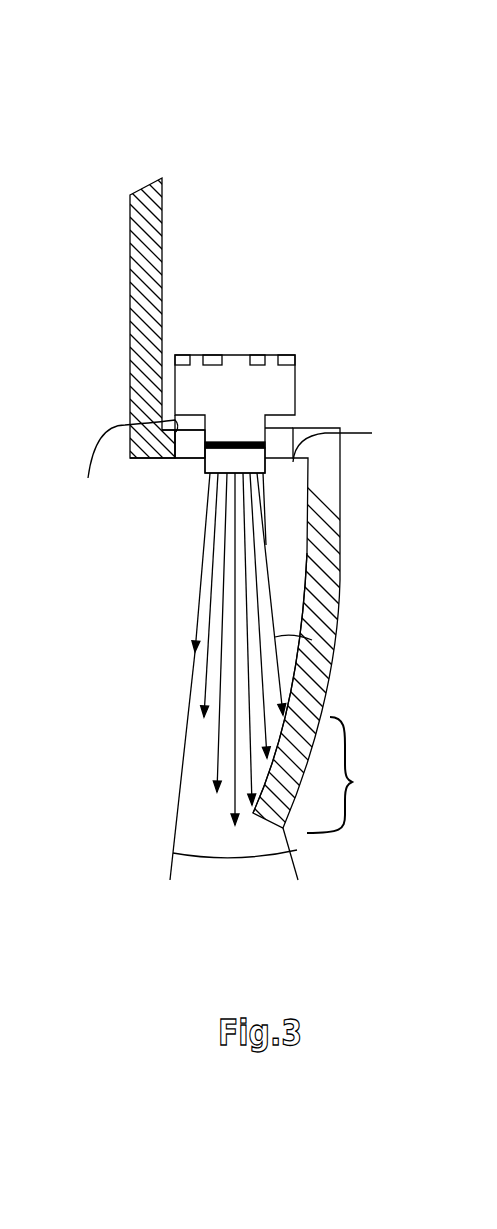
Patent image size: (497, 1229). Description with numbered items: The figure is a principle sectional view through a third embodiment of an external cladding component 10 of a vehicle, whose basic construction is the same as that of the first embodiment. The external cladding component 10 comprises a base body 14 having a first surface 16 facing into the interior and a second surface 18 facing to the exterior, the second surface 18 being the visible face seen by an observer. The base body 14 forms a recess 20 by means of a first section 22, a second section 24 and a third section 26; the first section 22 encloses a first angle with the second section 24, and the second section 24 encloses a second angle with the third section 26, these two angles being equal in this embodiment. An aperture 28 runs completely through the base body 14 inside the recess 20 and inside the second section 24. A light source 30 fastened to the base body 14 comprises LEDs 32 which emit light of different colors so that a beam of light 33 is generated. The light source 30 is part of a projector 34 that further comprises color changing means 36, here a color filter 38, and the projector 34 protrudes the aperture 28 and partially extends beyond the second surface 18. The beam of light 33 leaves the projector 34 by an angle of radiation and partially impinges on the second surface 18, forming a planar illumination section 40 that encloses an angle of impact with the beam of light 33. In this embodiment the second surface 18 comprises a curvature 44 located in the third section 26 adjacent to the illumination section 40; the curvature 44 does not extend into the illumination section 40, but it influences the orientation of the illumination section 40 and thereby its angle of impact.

The external cladding component 10 is at (122, 132).
The base body 14 is at (163, 260).
The first surface 16 is at (163, 213).
The second surface 18 is at (130, 242).
The recess 20 is at (273, 490).
The first section 22 is at (149, 330).
The second section 24 is at (168, 458).
The third section 26 is at (317, 547).
The aperture 28 is at (192, 452).
The light source 30 is at (265, 345).
The LEDs 32 is at (269, 407).
The beam of light 33 is at (176, 592).
The projector 34 is at (295, 377).
The color changing means 36 is at (237, 441).
The color filter 38 is at (235, 445).
The illumination section 40 is at (348, 775).
The curvature 44 is at (322, 628).